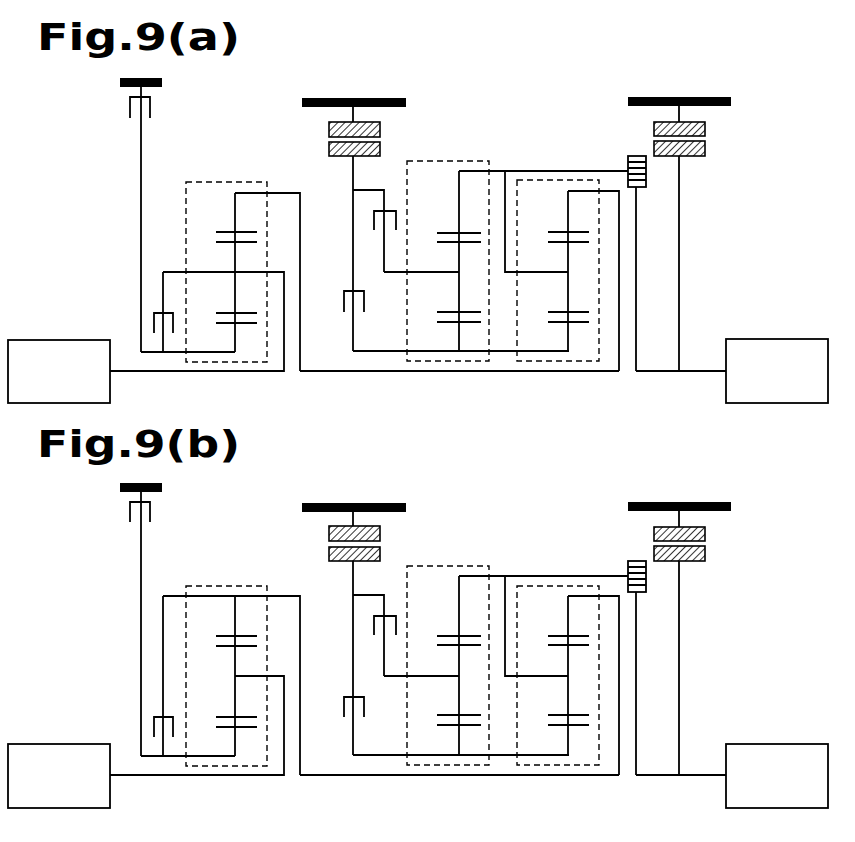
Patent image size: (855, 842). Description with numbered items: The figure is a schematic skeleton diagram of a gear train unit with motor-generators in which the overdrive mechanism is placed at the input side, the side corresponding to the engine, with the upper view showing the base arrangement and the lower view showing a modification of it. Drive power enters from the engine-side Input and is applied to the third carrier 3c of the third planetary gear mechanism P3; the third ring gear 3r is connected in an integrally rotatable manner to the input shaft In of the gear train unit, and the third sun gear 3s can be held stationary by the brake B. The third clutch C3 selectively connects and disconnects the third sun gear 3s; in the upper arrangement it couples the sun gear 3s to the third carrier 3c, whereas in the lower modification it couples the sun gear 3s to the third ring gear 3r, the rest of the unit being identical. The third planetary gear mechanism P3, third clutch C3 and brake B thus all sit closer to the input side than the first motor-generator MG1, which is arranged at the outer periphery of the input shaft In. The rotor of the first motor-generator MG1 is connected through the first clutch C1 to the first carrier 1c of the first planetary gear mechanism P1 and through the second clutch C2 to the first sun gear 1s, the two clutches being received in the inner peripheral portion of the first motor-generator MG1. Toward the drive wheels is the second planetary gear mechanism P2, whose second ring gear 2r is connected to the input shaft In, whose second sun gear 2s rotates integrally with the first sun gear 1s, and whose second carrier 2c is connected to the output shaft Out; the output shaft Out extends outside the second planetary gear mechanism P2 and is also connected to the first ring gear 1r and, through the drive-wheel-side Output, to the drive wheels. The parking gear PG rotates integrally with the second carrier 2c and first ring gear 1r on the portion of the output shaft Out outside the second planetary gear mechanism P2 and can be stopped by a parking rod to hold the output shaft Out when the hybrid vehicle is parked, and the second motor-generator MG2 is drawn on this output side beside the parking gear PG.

In FIG. 9A, the brake B is at (152, 111).
In FIG. 9B, the brake B is at (155, 619).
In FIG. 9A, the third planetary gear mechanism P3 is at (221, 180).
In FIG. 9B, the third planetary gear mechanism P3 is at (226, 649).
In FIG. 9A, the third ring gear 3r is at (234, 212).
In FIG. 9B, the third ring gear 3r is at (231, 685).
In FIG. 9A, the third carrier 3c is at (234, 292).
In FIG. 9B, the third carrier 3c is at (197, 725).
In FIG. 9A, the third sun gear 3s is at (234, 340).
In FIG. 9B, the third sun gear 3s is at (188, 745).
In FIG. 9A, the third clutch C3 is at (154, 320).
In FIG. 9B, the third clutch C3 is at (129, 676).
In FIG. 9A, the first motor-generator MG1 is at (341, 224).
In FIG. 9B, the first motor-generator MG1 is at (341, 629).
In FIG. 9A, the first clutch C1 is at (374, 223).
In FIG. 9B, the first clutch C1 is at (357, 635).
In FIG. 9A, the second clutch C2 is at (364, 297).
In FIG. 9B, the second clutch C2 is at (369, 723).
In FIG. 9A, the first planetary gear mechanism P1 is at (443, 158).
In FIG. 9B, the first planetary gear mechanism P1 is at (448, 641).
In FIG. 9A, the first ring gear 1r is at (459, 215).
In FIG. 9B, the first ring gear 1r is at (523, 665).
In FIG. 9A, the first carrier 1c is at (459, 291).
In FIG. 9B, the first carrier 1c is at (432, 700).
In FIG. 9A, the first sun gear 1s is at (459, 340).
In FIG. 9B, the first sun gear 1s is at (461, 743).
In FIG. 9A, the second planetary gear mechanism P2 is at (532, 178).
In FIG. 9B, the second planetary gear mechanism P2 is at (558, 643).
In FIG. 9A, the second ring gear 2r is at (568, 212).
In FIG. 9B, the second ring gear 2r is at (572, 685).
In FIG. 9A, the second carrier 2c is at (568, 291).
In FIG. 9B, the second carrier 2c is at (547, 650).
In FIG. 9A, the second sun gear 2s is at (568, 340).
In FIG. 9B, the second sun gear 2s is at (545, 743).
In FIG. 9A, the parking gear PG is at (632, 156).
In FIG. 9B, the parking gear PG is at (623, 646).
In FIG. 9A, the second motor-generator MG2 is at (694, 234).
In FIG. 9B, the second motor-generator MG2 is at (694, 638).
In FIG. 9A, the input shaft In is at (335, 371).
In FIG. 9B, the input shaft In is at (459, 803).
In FIG. 9A, the output shaft Out is at (700, 371).
In FIG. 9B, the output shaft Out is at (681, 803).
In FIG. 9A, the input (engine side) Input is at (59, 371).
In FIG. 9B, the input (engine side) Input is at (59, 776).
In FIG. 9A, the output (drive wheel side) Output is at (777, 371).
In FIG. 9B, the output (drive wheel side) Output is at (777, 776).